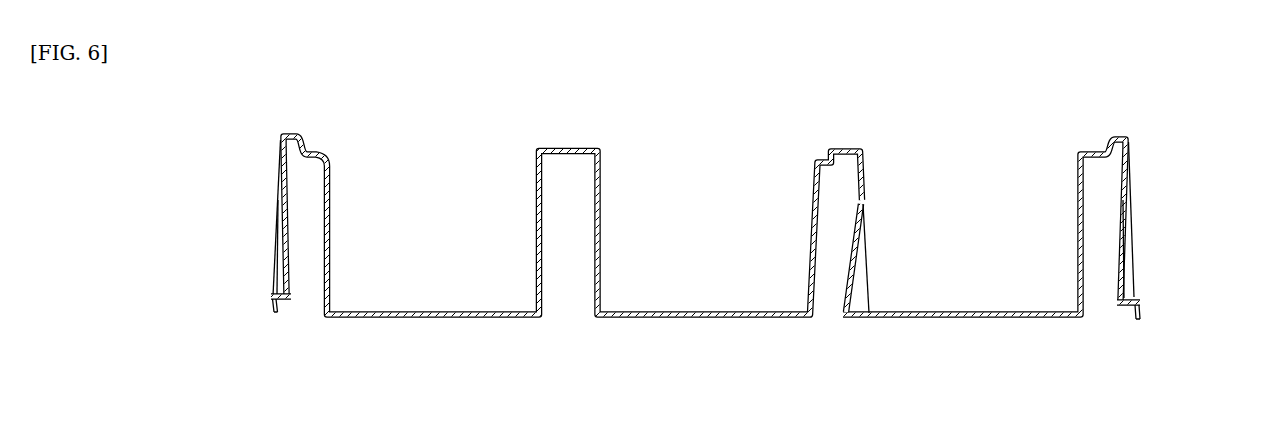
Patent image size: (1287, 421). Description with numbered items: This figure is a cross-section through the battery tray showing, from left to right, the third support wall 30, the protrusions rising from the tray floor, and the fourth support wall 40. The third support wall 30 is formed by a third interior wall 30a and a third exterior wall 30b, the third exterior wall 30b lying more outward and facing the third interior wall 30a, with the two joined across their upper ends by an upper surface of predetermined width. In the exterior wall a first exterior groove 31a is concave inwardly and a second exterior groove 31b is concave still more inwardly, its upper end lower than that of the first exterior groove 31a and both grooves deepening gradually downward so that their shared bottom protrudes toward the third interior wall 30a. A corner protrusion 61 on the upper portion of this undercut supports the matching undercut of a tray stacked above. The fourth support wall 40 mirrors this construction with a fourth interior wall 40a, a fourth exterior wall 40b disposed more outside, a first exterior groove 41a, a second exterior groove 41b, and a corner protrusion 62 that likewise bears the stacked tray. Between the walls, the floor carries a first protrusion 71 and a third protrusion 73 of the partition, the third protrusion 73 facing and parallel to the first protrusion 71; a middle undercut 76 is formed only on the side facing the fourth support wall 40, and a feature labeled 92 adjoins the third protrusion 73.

The third support wall 30 is at (334, 161).
The third interior wall 30a is at (330, 212).
The third exterior wall 30b is at (280, 163).
The first exterior groove 31a is at (277, 250).
The second exterior groove 31b is at (285, 276).
The corner protrusion 61 is at (286, 133).
The corner protrusion 62 is at (1113, 136).
The fourth support wall 40 is at (1133, 135).
The fourth interior wall 40a is at (1079, 220).
The fourth exterior wall 40b is at (1126, 237).
The first exterior groove 41a is at (1131, 165).
The second exterior groove 41b is at (1126, 275).
The first protrusion 71 is at (600, 229).
The third protrusion 73 is at (853, 209).
The middle undercut 76 is at (852, 289).
The step portion 92 is at (828, 156).